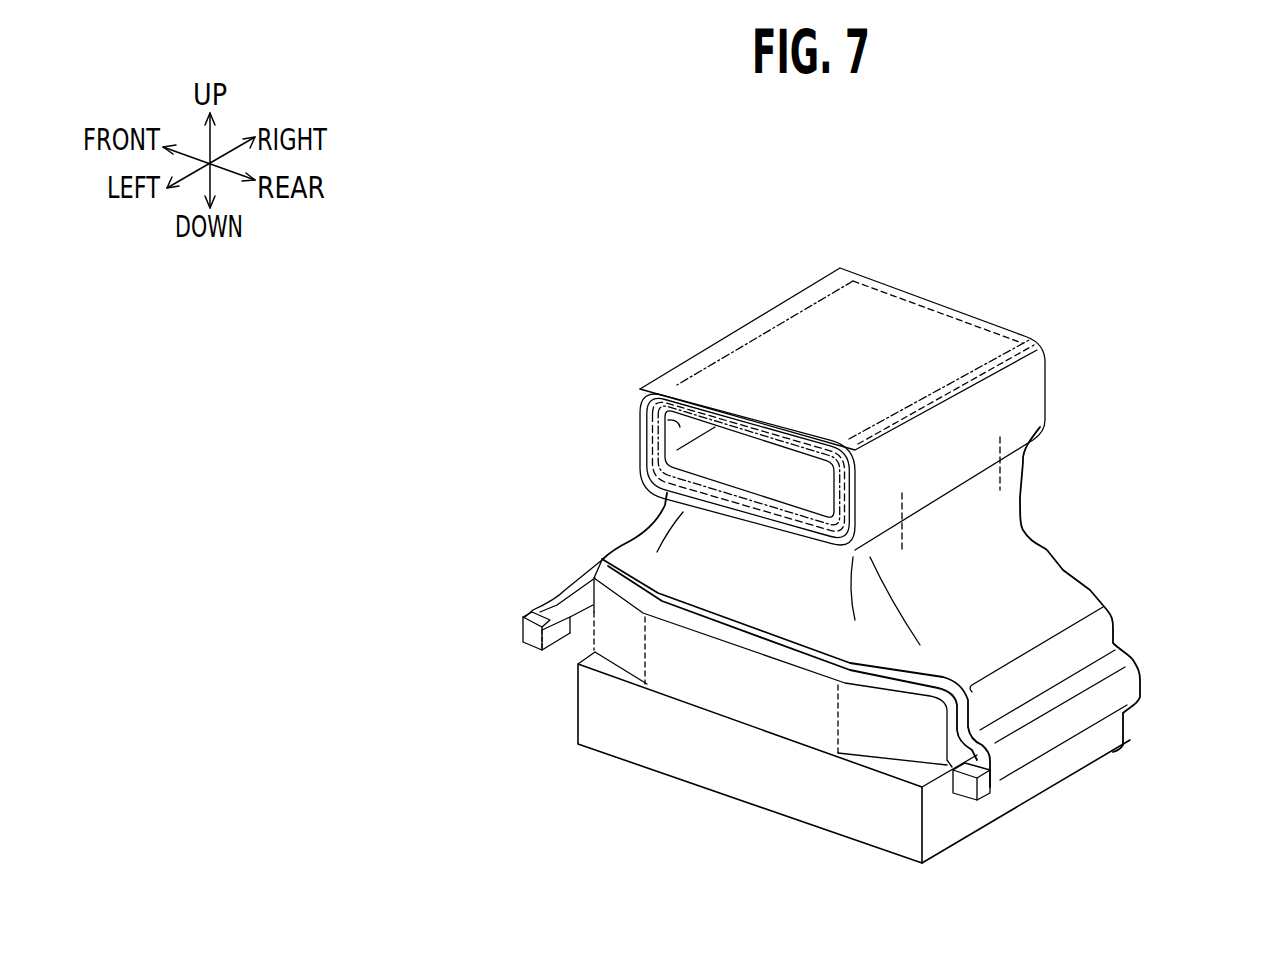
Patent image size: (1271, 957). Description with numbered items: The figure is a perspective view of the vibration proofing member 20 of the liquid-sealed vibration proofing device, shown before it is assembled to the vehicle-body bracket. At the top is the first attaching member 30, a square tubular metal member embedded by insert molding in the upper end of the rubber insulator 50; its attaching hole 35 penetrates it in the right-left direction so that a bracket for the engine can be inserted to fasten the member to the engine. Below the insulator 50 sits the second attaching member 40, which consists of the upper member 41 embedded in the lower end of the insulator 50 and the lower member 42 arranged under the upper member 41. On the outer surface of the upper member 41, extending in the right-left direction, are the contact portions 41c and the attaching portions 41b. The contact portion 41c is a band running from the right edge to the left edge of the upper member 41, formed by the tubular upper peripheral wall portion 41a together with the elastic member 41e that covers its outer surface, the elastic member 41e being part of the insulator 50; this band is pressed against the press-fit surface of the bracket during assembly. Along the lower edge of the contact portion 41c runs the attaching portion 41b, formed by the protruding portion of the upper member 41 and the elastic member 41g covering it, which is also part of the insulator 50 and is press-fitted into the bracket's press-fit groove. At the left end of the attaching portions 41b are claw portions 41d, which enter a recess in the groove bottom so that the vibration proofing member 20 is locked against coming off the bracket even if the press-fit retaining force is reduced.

The vibration proofing member 20 is at (710, 293).
The first attaching member 30 is at (1045, 384).
The attaching hole 35 is at (672, 423).
The second attaching member 40 is at (756, 822).
The upper member 41 is at (748, 703).
The upper peripheral wall portion 41a is at (604, 590).
The attaching portion 41b is at (560, 593).
The contact portion 41c is at (600, 557).
The claw portion 41d is at (523, 630).
The elastic member 41e is at (1120, 631).
The elastic member 41g is at (1142, 690).
The lower member 42 is at (653, 738).
The insulator 50 is at (1047, 567).